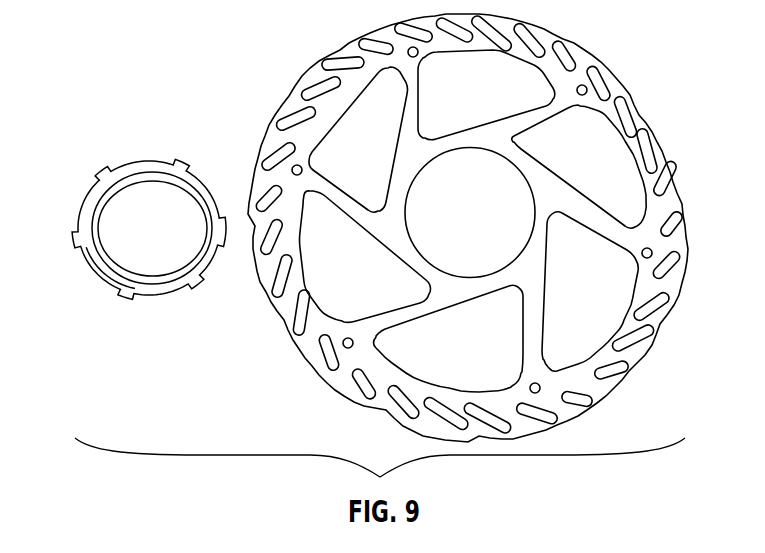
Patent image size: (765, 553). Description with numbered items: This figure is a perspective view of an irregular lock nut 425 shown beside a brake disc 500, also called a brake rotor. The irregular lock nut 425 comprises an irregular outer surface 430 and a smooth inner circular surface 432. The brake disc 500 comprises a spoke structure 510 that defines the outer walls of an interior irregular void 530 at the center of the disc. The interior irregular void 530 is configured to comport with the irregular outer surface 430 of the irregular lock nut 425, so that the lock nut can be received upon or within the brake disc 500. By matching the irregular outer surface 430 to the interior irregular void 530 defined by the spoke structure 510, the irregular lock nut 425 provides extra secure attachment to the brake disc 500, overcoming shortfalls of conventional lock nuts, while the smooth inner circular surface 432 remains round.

The brake disc 500 is at (612, 90).
The spoke structure 510 is at (543, 182).
The interior irregular void 530 is at (428, 232).
The irregular lock nut 425 is at (147, 157).
The irregular outer surface 430 is at (114, 323).
The smooth inner circular surface 432 is at (105, 200).